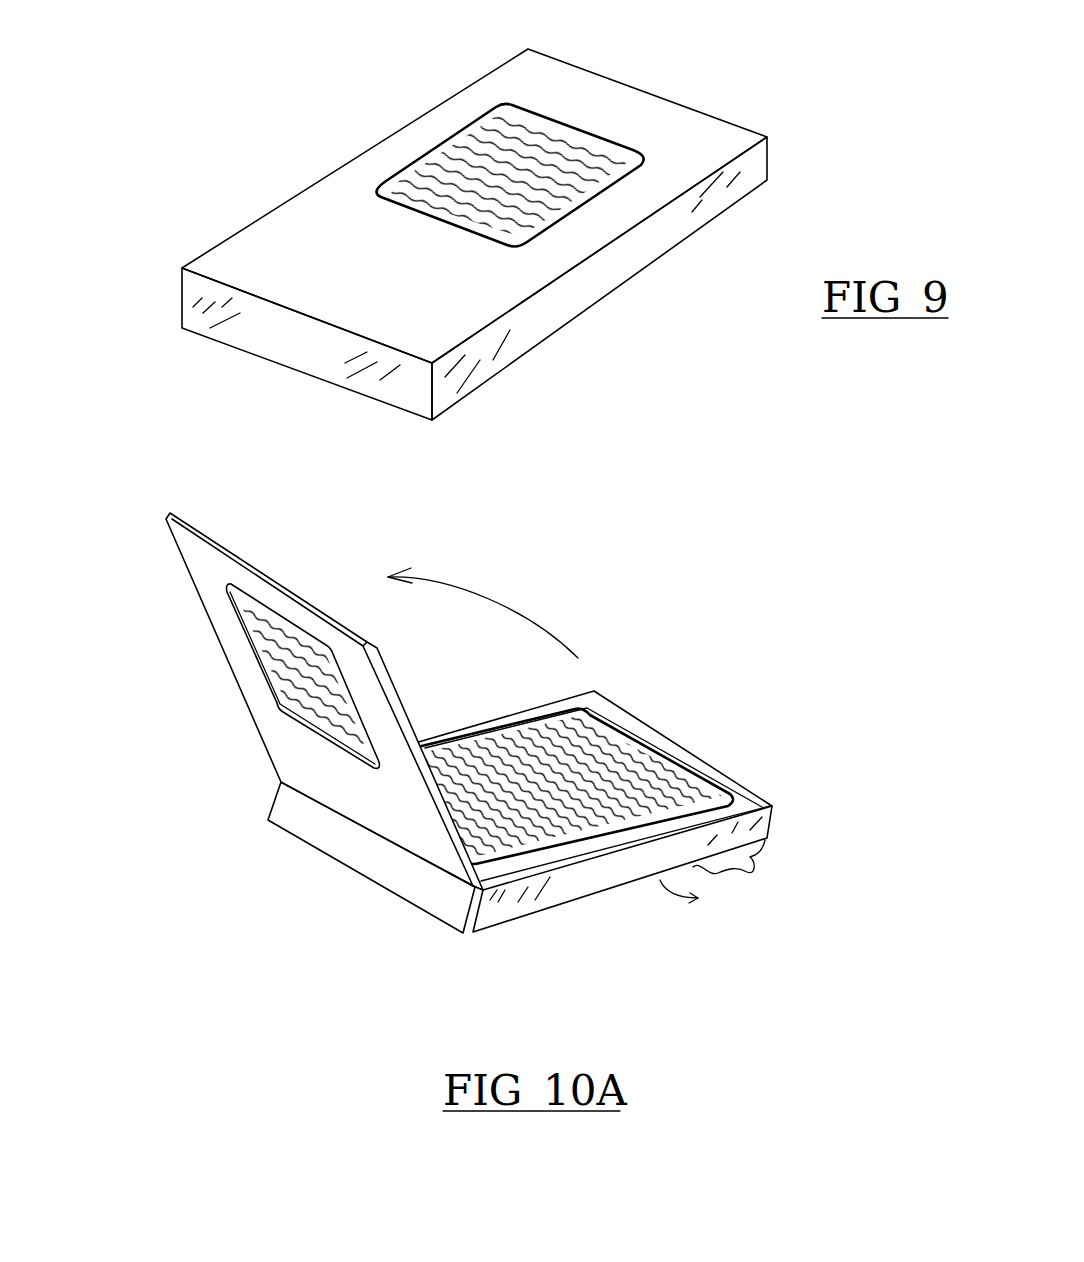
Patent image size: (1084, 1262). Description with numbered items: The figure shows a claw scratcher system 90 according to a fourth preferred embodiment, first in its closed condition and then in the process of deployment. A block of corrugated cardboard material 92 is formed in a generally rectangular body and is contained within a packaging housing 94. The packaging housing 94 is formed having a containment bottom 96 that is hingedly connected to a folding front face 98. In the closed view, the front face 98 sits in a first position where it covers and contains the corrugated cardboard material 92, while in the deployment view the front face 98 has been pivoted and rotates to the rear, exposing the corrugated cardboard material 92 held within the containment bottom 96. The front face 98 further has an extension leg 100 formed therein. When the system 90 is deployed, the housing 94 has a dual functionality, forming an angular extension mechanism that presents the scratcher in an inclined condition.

In FIG. 9, the claw scratcher system 90 is at (673, 79).
In FIG. 10A, the claw scratcher system 90 is at (213, 682).
In FIG. 9, the corrugated cardboard material 92 is at (462, 143).
In FIG. 10A, the corrugated cardboard material 92 is at (617, 767).
In FIG. 9, the packaging housing 94 is at (547, 328).
In FIG. 10A, the packaging housing 94 is at (345, 867).
In FIG. 10A, the containment bottom 96 is at (753, 818).
In FIG. 10A, the folding front face 98 is at (201, 520).
In FIG. 10A, the extension leg 100 is at (760, 880).